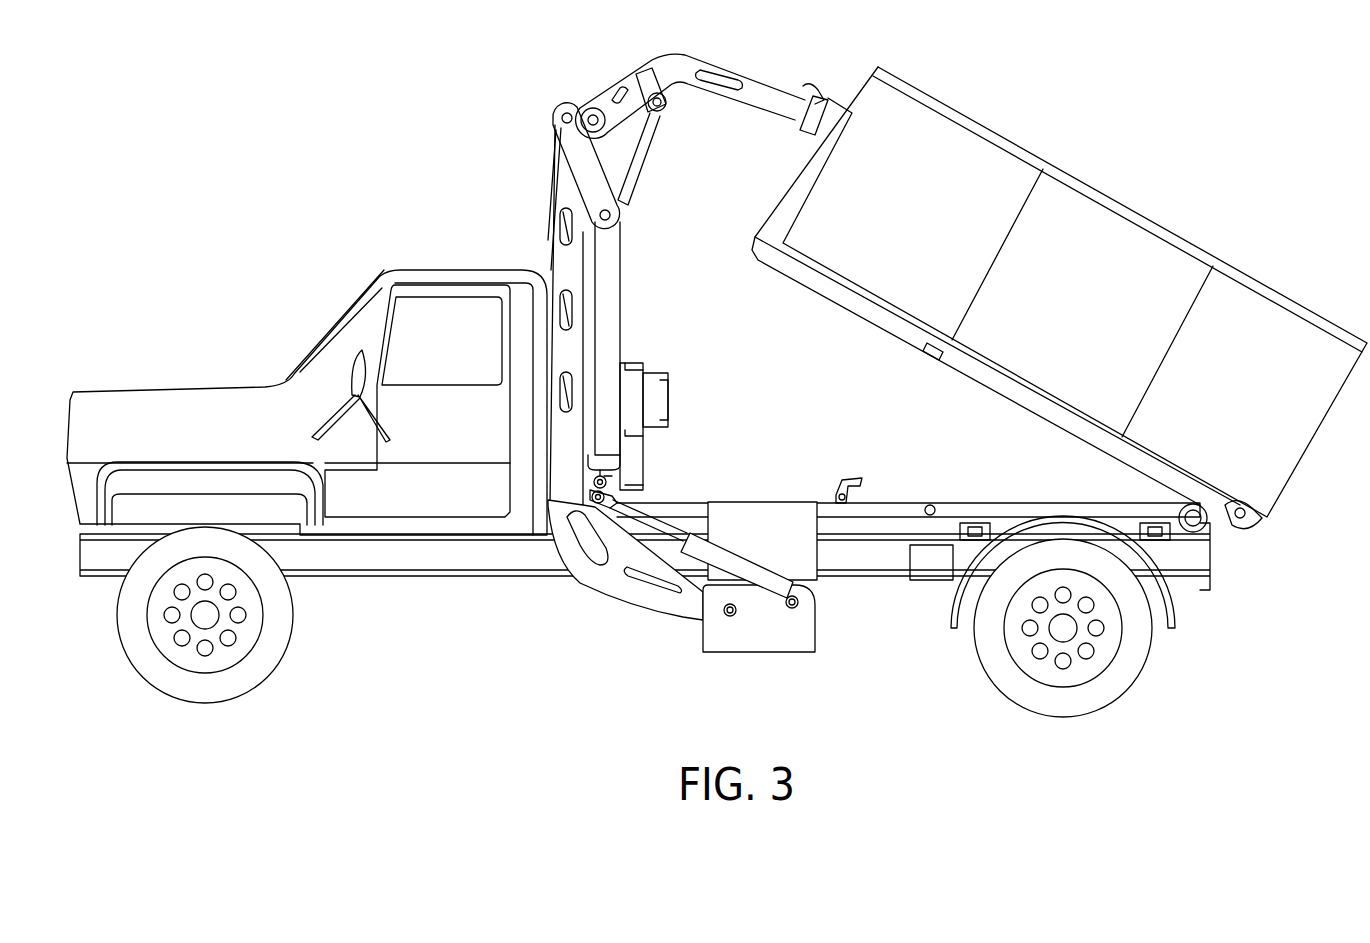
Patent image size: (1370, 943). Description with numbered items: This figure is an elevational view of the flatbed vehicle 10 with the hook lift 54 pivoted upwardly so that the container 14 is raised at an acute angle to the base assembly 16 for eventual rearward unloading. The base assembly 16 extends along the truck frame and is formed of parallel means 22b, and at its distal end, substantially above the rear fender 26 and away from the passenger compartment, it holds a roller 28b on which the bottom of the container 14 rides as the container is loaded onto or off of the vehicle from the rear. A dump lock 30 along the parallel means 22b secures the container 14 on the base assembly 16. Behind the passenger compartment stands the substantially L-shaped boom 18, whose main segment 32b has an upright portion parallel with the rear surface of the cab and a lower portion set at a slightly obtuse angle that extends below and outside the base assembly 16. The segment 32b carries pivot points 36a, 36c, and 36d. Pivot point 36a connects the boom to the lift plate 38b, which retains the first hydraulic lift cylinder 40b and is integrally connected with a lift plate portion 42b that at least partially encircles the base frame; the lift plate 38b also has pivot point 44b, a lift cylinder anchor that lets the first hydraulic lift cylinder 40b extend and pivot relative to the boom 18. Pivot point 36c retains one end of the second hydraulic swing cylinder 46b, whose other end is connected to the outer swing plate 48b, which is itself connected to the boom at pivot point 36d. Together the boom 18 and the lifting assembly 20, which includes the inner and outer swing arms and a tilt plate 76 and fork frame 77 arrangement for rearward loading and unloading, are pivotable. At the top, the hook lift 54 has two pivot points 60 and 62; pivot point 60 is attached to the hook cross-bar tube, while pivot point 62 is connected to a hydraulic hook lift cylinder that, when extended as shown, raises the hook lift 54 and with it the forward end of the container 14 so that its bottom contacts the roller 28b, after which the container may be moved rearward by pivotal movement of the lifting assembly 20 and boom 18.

The vehicle 10 is at (430, 262).
The container 14 is at (960, 150).
The base assembly 16 is at (930, 498).
The substantially L-shaped boom 18 is at (533, 315).
The lifting assembly 20 is at (556, 88).
The parallel means 22b is at (1005, 502).
The rear fender 26 is at (1178, 615).
The roller 28b is at (1205, 530).
The dump lock 30 is at (838, 480).
The main segment 32b is at (563, 332).
The pivot point 36a is at (732, 618).
The pivot point 36c is at (593, 480).
The pivot point 36d is at (560, 118).
The lift plate 38b is at (797, 652).
The first hydraulic lift cylinder 40b is at (697, 600).
The lift plate portion 42b is at (762, 541).
The pivot point 44b is at (800, 606).
The second hydraulic swing cylinder 46b is at (610, 290).
The outer swing plate 48b is at (570, 155).
The hook lift 54 is at (760, 85).
The pivot point 60 is at (594, 108).
The pivot point 62 is at (666, 107).
The tilt plate 76 is at (640, 365).
The fork frame 77 is at (668, 380).